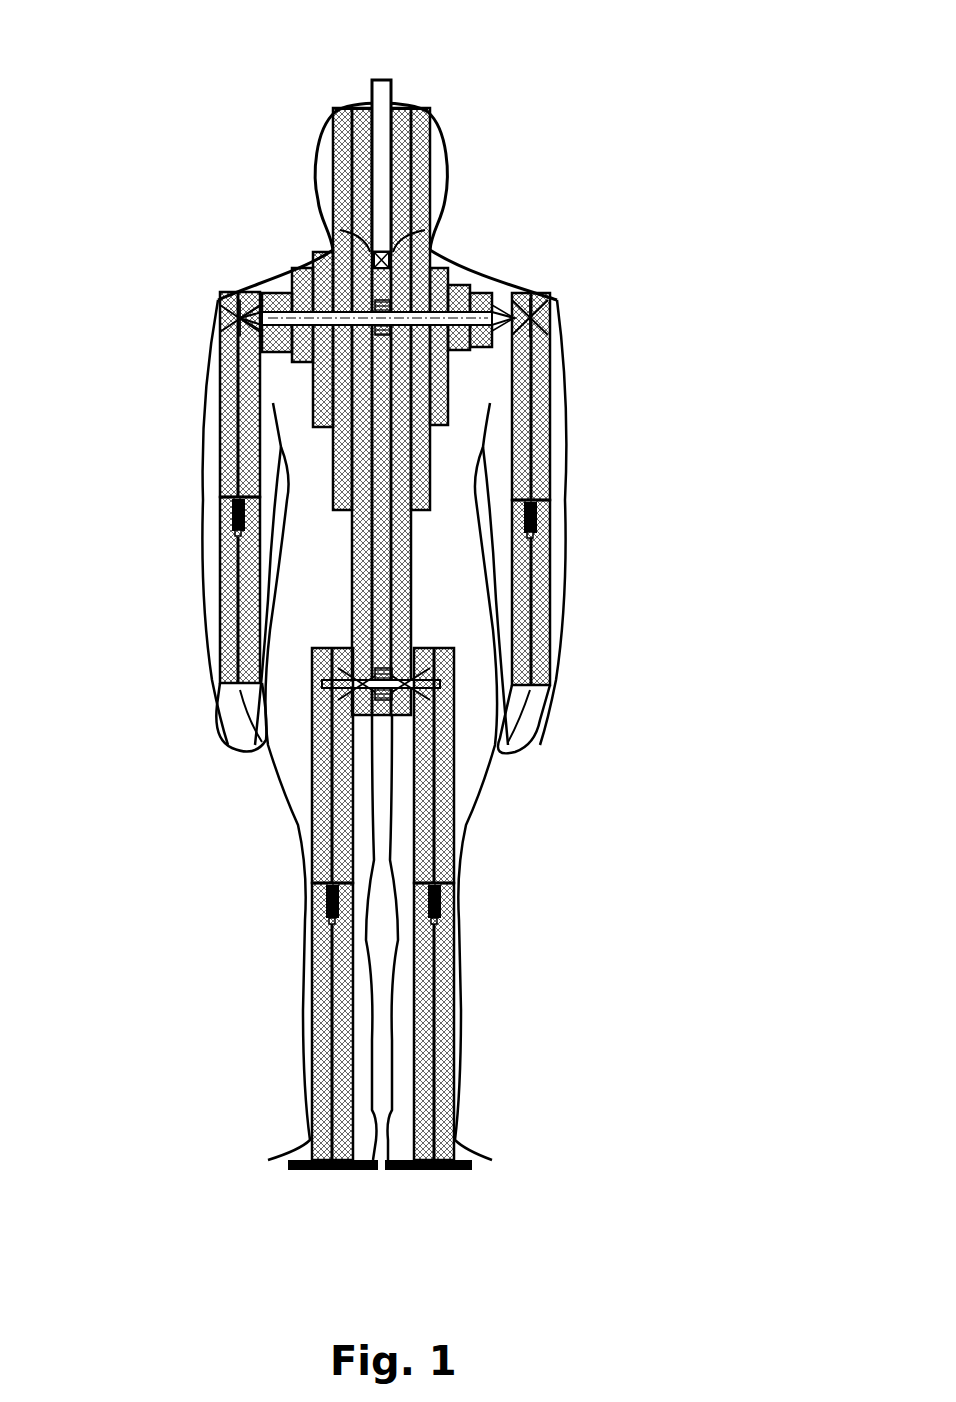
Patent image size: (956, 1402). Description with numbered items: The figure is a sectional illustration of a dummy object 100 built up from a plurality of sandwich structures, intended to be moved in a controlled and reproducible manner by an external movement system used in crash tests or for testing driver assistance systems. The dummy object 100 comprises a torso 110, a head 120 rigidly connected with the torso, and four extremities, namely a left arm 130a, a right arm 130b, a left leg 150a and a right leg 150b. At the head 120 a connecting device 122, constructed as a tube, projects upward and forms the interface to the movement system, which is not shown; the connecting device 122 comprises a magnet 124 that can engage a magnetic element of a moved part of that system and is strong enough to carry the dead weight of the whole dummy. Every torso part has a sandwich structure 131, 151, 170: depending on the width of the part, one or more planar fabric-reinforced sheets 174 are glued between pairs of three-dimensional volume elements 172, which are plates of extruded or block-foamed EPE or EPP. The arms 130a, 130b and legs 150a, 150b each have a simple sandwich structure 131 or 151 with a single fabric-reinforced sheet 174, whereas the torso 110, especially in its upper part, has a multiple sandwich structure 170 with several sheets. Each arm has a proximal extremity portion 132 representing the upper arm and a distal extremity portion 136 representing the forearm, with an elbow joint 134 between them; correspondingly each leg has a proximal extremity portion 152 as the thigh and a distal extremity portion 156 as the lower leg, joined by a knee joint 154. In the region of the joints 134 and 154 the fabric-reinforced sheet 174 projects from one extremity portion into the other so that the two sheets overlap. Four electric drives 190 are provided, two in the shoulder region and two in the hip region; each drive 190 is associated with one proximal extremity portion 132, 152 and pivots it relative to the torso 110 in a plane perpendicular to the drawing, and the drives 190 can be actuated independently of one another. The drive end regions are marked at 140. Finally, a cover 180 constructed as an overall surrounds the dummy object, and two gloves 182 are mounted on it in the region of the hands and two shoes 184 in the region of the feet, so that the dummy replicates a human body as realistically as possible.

The dummy object 100 is at (740, 85).
The torso 110 is at (455, 567).
The head 120 is at (445, 152).
The connecting device 122 is at (388, 80).
The magnet 124 is at (340, 242).
The left arm 130a is at (170, 404).
The right arm 130b is at (628, 438).
The sandwich structure 131 is at (548, 277).
The proximal extremity portion 132 is at (235, 350).
The elbow joint 134 is at (208, 510).
The distal extremity portion 136 is at (200, 590).
The shoulder rod end 140 is at (258, 342).
The left leg 150a is at (243, 862).
The right leg 150b is at (510, 885).
The sandwich structure 151 is at (448, 635).
The proximal extremity portion 152 is at (300, 812).
The knee joint 154 is at (303, 905).
The distal extremity portion 156 is at (302, 990).
The sandwich structure 170 is at (438, 440).
The three-dimensional volume element 172 is at (482, 352).
The fabric-reinforced sheet 174 is at (392, 575).
The cover 180 is at (443, 195).
The gloves 182 is at (232, 722).
The shoes 184 is at (275, 1152).
The electric drive 190 is at (485, 278).